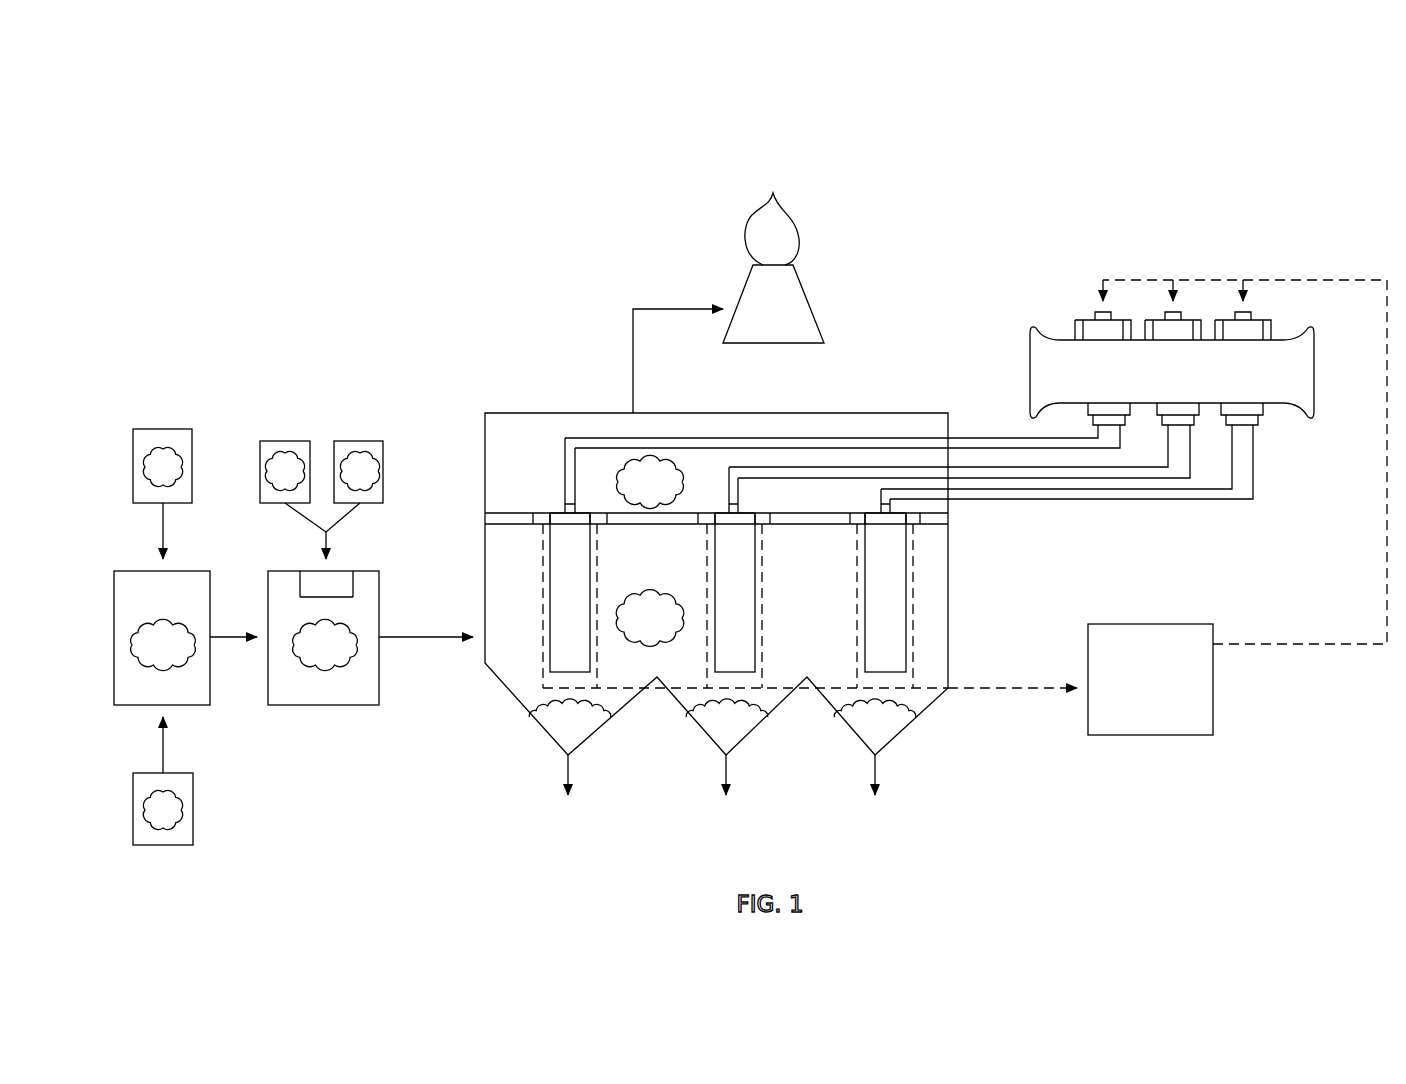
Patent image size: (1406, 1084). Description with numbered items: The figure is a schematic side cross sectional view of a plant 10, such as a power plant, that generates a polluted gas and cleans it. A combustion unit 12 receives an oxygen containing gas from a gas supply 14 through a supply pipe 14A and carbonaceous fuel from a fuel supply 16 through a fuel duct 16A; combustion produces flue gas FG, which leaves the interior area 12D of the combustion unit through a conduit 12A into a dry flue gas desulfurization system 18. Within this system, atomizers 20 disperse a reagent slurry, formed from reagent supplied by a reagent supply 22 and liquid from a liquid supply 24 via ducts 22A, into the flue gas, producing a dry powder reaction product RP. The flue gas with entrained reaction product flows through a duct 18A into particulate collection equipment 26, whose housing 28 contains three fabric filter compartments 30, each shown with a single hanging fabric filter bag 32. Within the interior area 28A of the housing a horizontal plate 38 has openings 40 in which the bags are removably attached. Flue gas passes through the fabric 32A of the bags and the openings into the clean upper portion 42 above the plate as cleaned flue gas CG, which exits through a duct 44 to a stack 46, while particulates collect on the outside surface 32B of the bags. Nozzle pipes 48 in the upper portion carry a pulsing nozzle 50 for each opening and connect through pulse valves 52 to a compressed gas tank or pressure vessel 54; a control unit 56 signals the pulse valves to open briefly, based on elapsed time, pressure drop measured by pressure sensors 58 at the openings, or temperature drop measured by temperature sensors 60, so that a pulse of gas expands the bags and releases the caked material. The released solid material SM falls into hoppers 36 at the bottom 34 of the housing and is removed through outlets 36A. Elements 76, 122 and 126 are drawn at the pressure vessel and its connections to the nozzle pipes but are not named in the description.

The plant 10 is at (1062, 140).
The combustion unit 12 is at (114, 637).
The conduit 12A is at (240, 642).
The interior area 12D is at (197, 608).
The gas supply 14 is at (165, 845).
The supply pipe 14A is at (165, 740).
The fuel supply 16 is at (165, 429).
The fuel duct 16A is at (165, 522).
The dry flue gas desulfurization (DFGD) system 18 is at (322, 705).
The duct 18A is at (430, 642).
The atomizer 20 is at (340, 571).
The reagent supply 22 is at (362, 441).
The ducts 22A is at (338, 525).
The liquid supply 24 is at (287, 441).
The particulate collection equipment 26 is at (505, 413).
The housing 28 is at (877, 413).
The interior area 28A is at (540, 430).
The fabric filter compartment 30 is at (515, 682).
The fabric filter bag 32 is at (582, 575).
The fabric 32A is at (550, 614).
The outside surface 32B is at (752, 615).
The bottom 34 is at (950, 688).
The hopper 36 is at (600, 725).
The outlet 36A is at (572, 768).
The horizontal plate 38 is at (512, 513).
The openings 40 is at (560, 508).
The upper portion 42 is at (553, 450).
The duct 44 is at (634, 378).
The stack 46 is at (812, 302).
The nozzle pipe 48 is at (967, 437).
The pulsing nozzle 50 is at (580, 506).
The pulse valve 52 is at (1136, 270).
The compressed gas tank or pressure vessel 54 is at (1314, 360).
The control unit 56 is at (1146, 624).
The pressure sensor 58 is at (598, 526).
The temperature sensor 60 is at (545, 528).
The valves 76 is at (1115, 320).
The outlet ports 122 is at (1090, 410).
The fittings 126 is at (1130, 420).